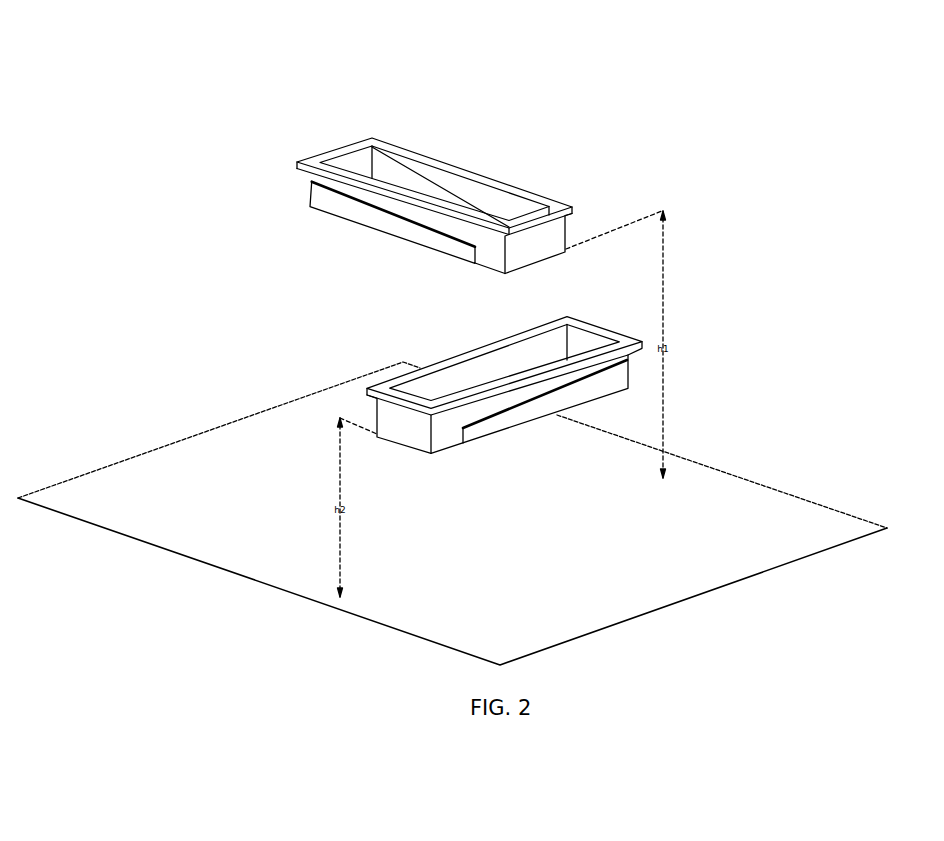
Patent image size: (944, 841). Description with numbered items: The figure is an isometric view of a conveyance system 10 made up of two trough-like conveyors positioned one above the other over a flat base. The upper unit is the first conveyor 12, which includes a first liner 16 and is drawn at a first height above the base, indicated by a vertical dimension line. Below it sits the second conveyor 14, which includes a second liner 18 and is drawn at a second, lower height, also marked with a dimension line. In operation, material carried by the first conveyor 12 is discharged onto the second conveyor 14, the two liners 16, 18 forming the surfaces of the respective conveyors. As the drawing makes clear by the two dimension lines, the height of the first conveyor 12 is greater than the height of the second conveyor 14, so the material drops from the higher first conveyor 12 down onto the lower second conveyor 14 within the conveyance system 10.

The conveyance system 10 is at (252, 75).
The first conveyor 12 is at (343, 220).
The second conveyor 14 is at (527, 423).
The first liner 16 is at (466, 170).
The second liner 18 is at (472, 352).